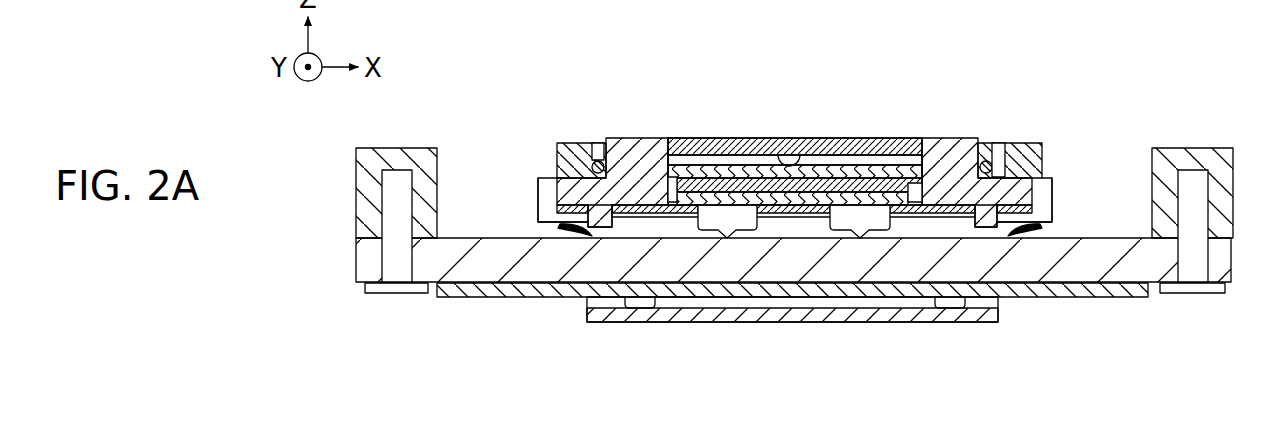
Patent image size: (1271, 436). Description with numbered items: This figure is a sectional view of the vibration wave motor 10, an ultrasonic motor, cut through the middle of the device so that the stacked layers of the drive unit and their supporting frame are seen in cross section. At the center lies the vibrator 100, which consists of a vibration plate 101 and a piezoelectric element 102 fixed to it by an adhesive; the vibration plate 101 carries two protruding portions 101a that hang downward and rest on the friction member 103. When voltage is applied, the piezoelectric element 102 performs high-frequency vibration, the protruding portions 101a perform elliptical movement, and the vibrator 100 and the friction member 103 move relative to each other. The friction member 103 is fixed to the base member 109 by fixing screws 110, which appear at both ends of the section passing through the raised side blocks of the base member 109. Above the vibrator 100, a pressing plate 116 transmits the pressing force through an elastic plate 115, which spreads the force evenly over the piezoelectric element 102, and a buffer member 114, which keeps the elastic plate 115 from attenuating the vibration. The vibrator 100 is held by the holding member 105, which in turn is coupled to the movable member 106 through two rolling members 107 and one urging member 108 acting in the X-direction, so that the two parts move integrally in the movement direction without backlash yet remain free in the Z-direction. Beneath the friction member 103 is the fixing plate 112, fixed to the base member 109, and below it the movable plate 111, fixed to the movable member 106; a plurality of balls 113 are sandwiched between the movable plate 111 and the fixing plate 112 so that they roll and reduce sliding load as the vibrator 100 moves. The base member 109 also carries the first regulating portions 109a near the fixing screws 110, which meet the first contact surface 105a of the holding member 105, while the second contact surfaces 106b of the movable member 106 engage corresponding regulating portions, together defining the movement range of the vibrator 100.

The vibration wave motor 10 is at (502, 57).
The vibrator 100 is at (787, 120).
The vibration plate 101 is at (767, 207).
The protruding portions 101a is at (740, 228).
The piezoelectric element 102 is at (815, 197).
The friction member 103 is at (1055, 268).
The holding member 105 is at (640, 150).
The first contact surface 105a is at (540, 192).
The movable member 106 is at (1030, 143).
The second contact surfaces 106b is at (537, 210).
The rolling members 107 is at (597, 161).
The urging member 108 is at (1000, 150).
The base member 109 is at (1213, 158).
The first regulating portions 109a is at (437, 183).
The fixing screws 110 is at (395, 275).
The movable plate 111 is at (893, 313).
The fixing plate 112 is at (505, 297).
The balls 113 is at (637, 303).
The buffer member 114 is at (743, 183).
The elastic plate 115 is at (703, 163).
The pressing plate 116 is at (868, 143).